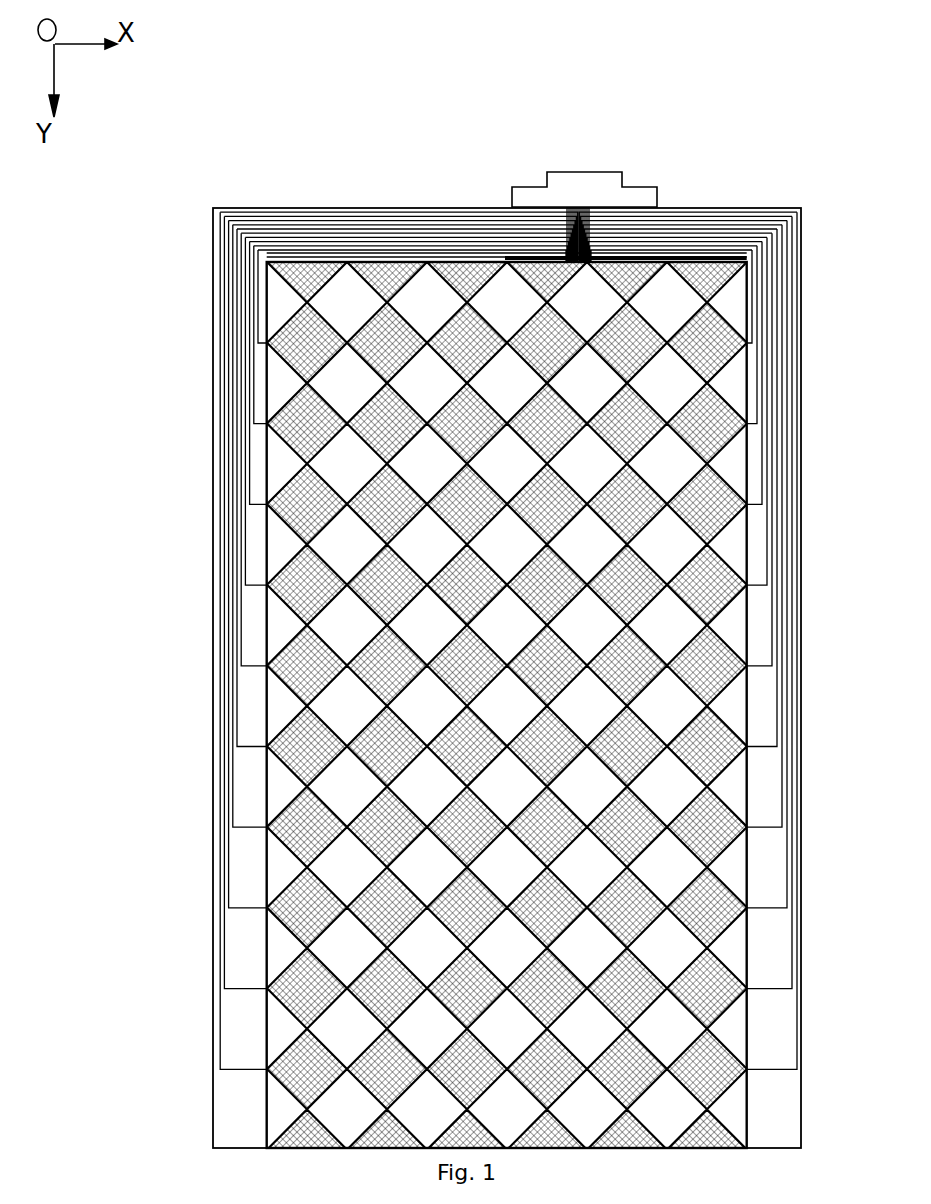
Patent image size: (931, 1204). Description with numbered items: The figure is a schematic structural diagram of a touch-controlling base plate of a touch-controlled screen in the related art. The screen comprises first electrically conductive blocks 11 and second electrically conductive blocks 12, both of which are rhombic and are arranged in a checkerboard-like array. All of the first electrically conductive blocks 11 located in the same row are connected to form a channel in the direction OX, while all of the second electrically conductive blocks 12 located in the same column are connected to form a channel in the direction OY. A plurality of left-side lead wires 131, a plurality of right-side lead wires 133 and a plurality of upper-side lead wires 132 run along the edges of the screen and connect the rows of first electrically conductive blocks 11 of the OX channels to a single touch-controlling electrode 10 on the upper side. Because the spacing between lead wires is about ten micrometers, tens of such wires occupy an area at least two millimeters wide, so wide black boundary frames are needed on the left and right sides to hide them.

The touch-controlling electrode 10 is at (580, 187).
The first electrically conductive blocks 11 is at (306, 345).
The second electrically conductive blocks 12 is at (357, 386).
The left-side lead wires 131 is at (213, 277).
The upper-side lead wires 132 is at (370, 207).
The right-side lead wires 133 is at (801, 303).